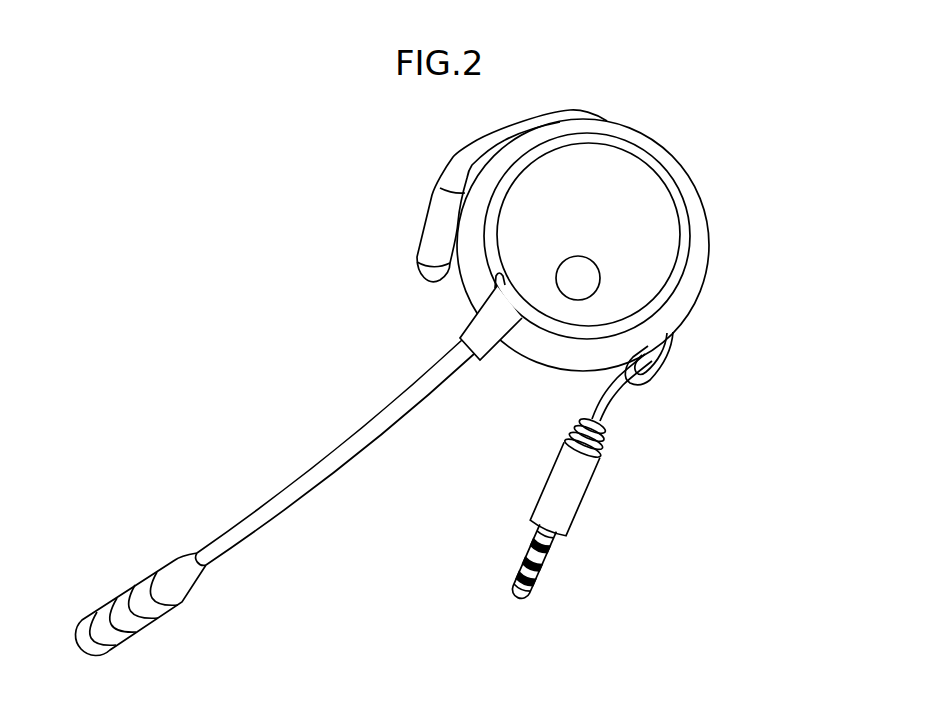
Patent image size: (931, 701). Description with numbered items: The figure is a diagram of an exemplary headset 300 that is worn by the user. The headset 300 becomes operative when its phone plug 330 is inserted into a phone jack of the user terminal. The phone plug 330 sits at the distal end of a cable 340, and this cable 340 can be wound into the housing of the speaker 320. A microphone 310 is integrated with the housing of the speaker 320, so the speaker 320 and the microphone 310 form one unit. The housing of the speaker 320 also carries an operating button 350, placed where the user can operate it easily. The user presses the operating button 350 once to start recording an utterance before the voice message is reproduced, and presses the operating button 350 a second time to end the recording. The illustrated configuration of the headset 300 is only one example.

The headset 300 is at (392, 177).
The microphone 310 is at (152, 577).
The speaker 320 is at (686, 174).
The phone plug 330 is at (534, 556).
The cable 340 is at (606, 404).
The operating button 350 is at (592, 272).